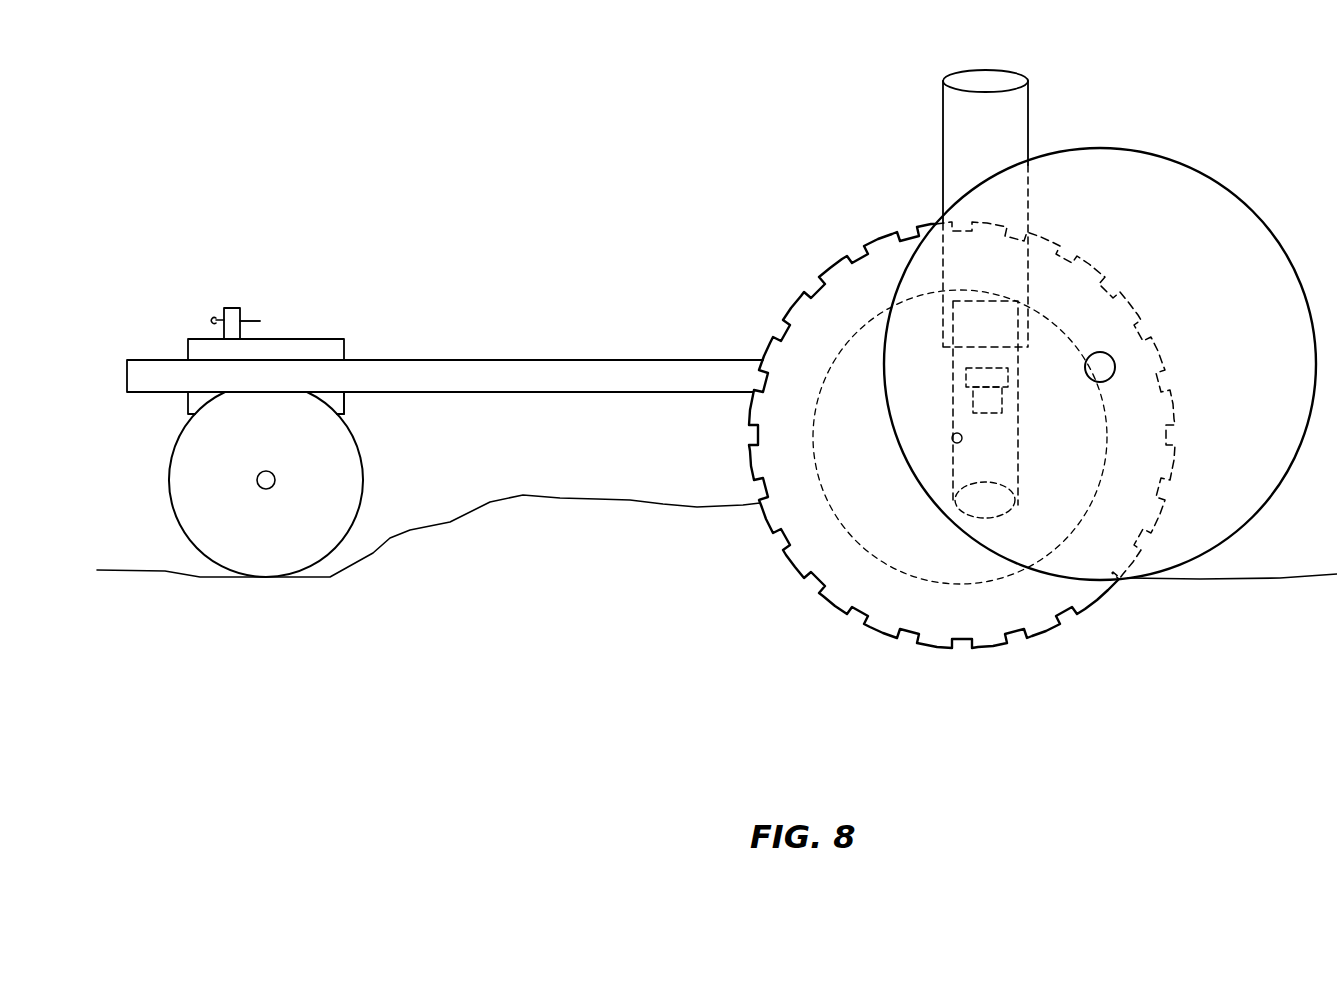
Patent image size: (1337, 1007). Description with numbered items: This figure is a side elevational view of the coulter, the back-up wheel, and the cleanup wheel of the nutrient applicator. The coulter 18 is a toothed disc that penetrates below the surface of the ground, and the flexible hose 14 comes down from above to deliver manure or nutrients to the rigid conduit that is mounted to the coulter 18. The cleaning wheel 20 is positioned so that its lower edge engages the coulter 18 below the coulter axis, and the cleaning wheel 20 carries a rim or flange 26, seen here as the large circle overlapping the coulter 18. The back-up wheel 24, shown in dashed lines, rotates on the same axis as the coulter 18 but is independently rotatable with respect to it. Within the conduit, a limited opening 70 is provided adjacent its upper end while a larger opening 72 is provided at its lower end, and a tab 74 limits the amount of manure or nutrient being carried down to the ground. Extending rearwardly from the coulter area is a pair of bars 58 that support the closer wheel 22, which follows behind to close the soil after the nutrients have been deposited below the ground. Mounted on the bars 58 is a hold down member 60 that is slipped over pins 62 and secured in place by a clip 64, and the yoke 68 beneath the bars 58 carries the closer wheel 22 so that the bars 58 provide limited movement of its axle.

The flexible hose 14 is at (943, 113).
The coulter 18 is at (795, 298).
The cleaning wheel 20 is at (970, 212).
The closer wheel 22 is at (185, 480).
The back-up wheel 24 is at (822, 382).
The rim or flange 26 is at (1153, 149).
The bars 58 is at (512, 360).
The hold down member 60 is at (323, 339).
The pins 62 is at (233, 307).
The clip 64 is at (256, 317).
The yoke 68 is at (345, 403).
The limited opening 70 is at (1003, 380).
The larger opening 72 is at (997, 497).
The tab 74 is at (997, 403).